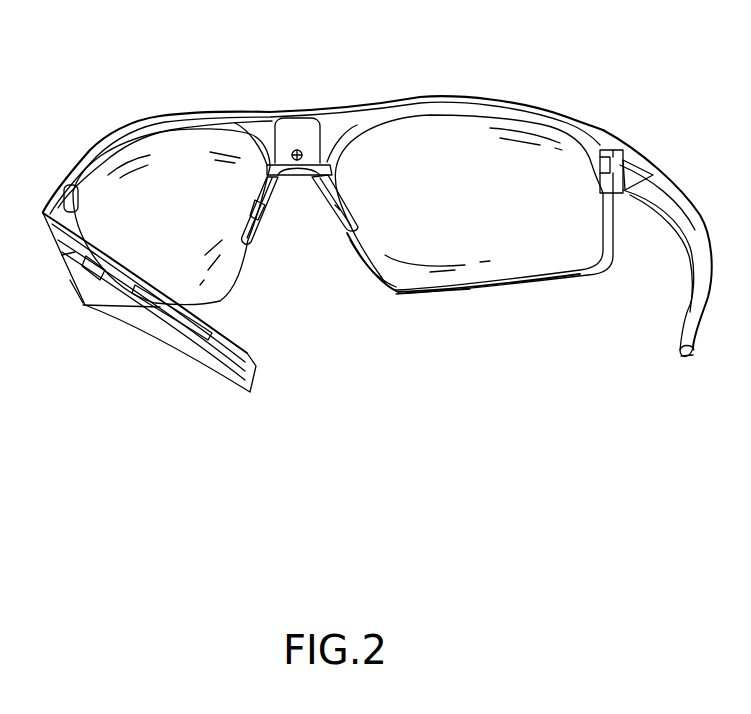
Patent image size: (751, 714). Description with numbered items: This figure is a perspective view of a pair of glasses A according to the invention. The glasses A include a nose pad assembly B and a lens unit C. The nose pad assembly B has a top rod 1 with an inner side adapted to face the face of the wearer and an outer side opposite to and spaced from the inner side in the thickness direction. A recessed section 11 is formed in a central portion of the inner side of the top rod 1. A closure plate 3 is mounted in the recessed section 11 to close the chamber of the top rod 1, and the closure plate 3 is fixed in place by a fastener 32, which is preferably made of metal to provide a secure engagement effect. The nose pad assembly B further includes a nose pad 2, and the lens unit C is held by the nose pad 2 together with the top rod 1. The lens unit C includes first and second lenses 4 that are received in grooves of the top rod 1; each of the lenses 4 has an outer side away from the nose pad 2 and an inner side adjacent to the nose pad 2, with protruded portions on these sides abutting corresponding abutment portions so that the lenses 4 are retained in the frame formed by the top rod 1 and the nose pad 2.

The top rod 1 is at (90, 132).
The recessed section 11 is at (250, 108).
The nose pad 2 is at (263, 232).
The closure plate 3 is at (257, 83).
The fastener 32 is at (305, 175).
The lenses 4 is at (517, 287).
The glasses A is at (135, 100).
The nose pad assembly B is at (514, 97).
The lens unit C is at (447, 323).